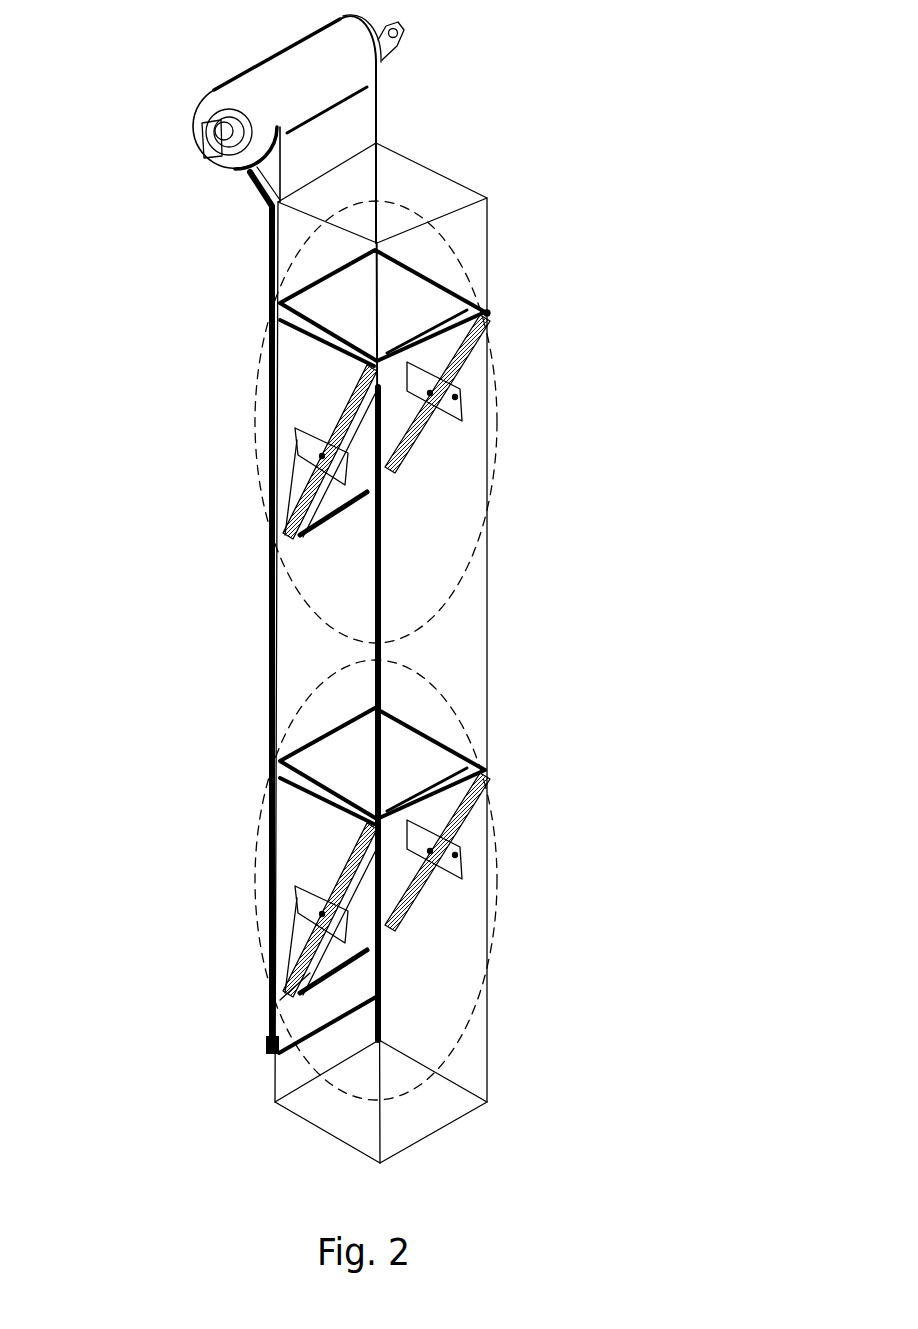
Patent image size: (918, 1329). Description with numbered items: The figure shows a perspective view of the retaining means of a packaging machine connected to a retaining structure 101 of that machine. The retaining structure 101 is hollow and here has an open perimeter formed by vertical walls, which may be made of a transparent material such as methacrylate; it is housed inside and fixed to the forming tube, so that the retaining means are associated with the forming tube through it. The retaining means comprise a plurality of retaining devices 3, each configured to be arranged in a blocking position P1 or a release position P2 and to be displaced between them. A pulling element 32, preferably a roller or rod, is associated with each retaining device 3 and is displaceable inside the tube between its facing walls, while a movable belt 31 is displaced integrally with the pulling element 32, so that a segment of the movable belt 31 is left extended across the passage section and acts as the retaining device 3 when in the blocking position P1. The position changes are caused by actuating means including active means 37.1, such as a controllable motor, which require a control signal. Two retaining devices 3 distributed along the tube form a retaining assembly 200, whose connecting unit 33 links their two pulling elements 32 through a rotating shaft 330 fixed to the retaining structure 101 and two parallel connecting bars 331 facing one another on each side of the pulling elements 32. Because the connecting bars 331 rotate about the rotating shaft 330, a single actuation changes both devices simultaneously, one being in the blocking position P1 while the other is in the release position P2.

The retaining structure 101 is at (440, 192).
The retaining assembly 200 is at (498, 447).
The movable belt 31 is at (360, 120).
The active means 37.1 is at (201, 134).
The pulling element 32 is at (268, 590).
The retaining device 3 is at (329, 301).
The connecting bar 331 is at (362, 400).
The rotating shaft 330 is at (298, 450).
The connecting unit 33 is at (402, 900).
The blocking position P1 is at (487, 313).
The release position P2 is at (268, 536).